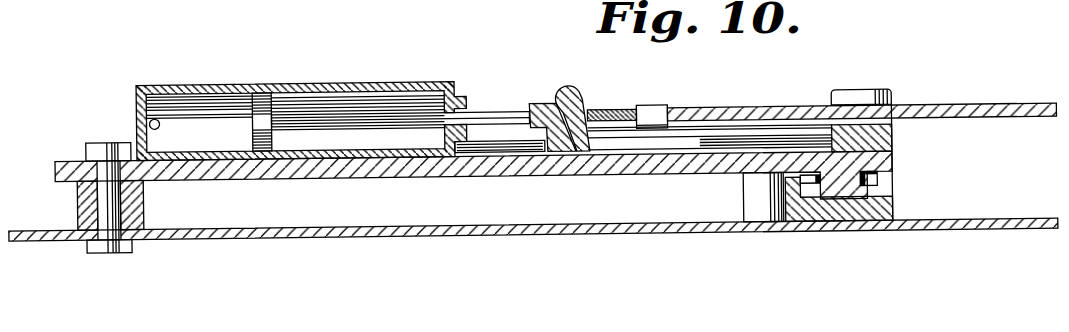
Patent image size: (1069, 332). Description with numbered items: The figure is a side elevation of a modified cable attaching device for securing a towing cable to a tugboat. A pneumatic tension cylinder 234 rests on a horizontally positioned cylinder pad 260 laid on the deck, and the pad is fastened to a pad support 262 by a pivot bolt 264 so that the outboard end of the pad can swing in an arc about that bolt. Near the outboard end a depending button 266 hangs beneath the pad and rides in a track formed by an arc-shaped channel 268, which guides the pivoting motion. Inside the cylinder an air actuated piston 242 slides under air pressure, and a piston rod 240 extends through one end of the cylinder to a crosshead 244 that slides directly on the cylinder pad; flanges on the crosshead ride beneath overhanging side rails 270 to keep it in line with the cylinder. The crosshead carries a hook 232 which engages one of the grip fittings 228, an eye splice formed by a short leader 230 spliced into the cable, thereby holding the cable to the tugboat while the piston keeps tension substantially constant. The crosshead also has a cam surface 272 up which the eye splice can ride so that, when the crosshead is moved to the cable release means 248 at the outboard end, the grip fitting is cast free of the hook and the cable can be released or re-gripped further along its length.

The grip fitting 228 is at (618, 111).
The leader 230 is at (802, 110).
The hook 232 is at (577, 100).
The pneumatic tension cylinder 234 is at (212, 80).
The piston rod 240 is at (478, 113).
The air actuated piston 242 is at (263, 97).
The crosshead 244 is at (537, 102).
The cable release means 248 is at (876, 95).
The cylinder pad 260 is at (498, 164).
The pad support 262 is at (143, 203).
The pivot bolt 264 is at (97, 147).
The depending button 266 is at (862, 200).
The arc-shaped channel 268 is at (888, 208).
The overhanging side rails 270 is at (757, 136).
The cam surface 272 is at (551, 100).